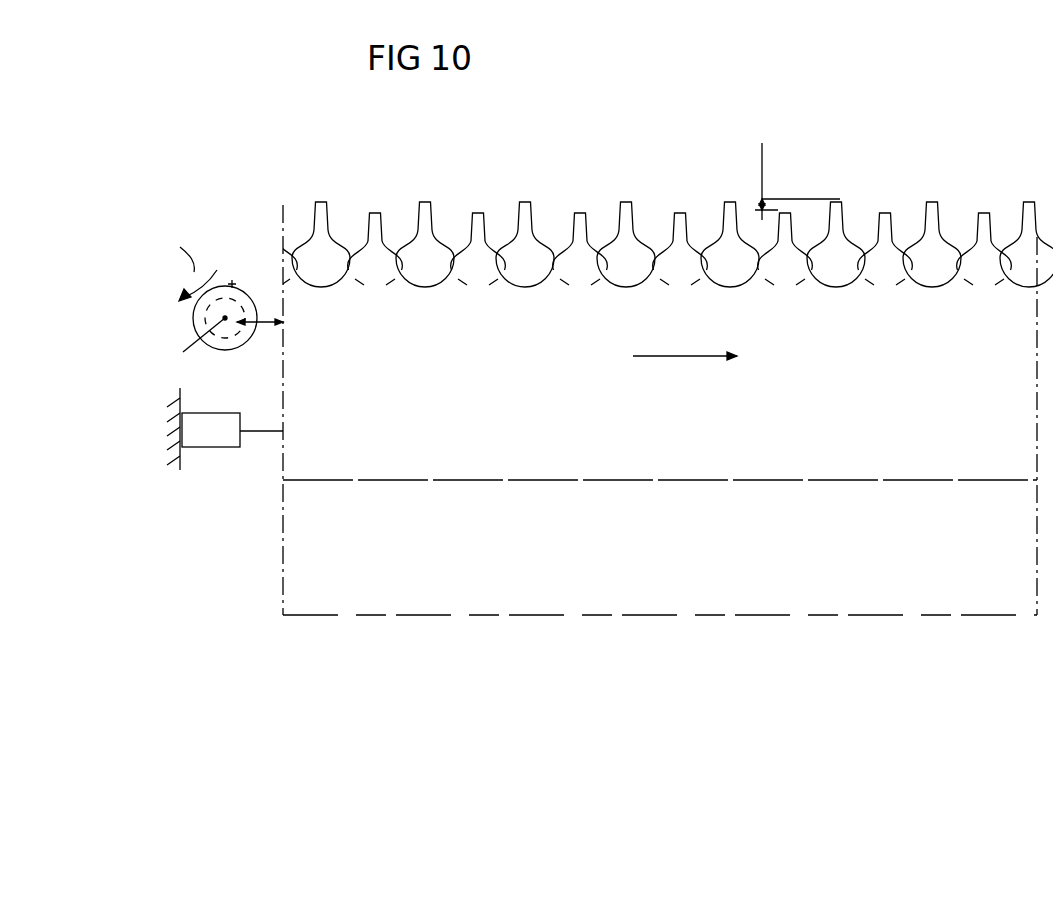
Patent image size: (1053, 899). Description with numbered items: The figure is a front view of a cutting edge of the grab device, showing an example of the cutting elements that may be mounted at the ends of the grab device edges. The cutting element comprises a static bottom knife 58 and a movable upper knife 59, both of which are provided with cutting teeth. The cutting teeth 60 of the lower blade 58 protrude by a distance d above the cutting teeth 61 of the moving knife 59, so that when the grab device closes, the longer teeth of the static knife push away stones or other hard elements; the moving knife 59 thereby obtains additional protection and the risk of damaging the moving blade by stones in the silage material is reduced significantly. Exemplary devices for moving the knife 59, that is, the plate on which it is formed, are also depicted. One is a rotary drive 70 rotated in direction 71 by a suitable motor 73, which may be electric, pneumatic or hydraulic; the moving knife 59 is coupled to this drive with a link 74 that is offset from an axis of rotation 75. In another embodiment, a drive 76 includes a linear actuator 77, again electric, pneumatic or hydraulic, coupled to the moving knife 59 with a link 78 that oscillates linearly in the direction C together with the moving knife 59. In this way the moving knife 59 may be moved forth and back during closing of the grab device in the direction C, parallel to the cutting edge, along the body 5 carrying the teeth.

The conveyor web 5 is at (668, 436).
The static bottom knife 58 is at (519, 201).
The movable upper knife 59 is at (578, 212).
The cutting teeth of the lower blade 60 is at (842, 202).
The cutting teeth of the moving knife 61 is at (890, 214).
The rotary drive 70 is at (252, 268).
The direction of rotation 71 is at (186, 258).
The motor 73 is at (232, 280).
The link 74 is at (263, 332).
The axis of rotation 75 is at (185, 353).
The drive 76 is at (167, 492).
The linear actuator 77 is at (213, 448).
The link 78 is at (259, 437).
The distance d is at (797, 171).
The direction C is at (685, 379).